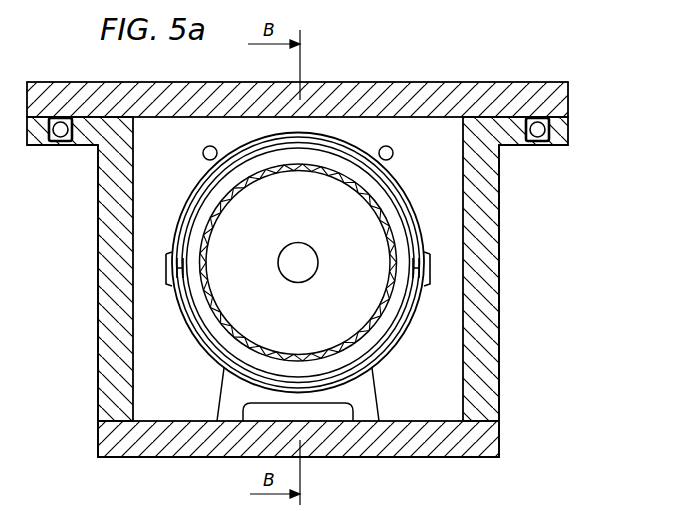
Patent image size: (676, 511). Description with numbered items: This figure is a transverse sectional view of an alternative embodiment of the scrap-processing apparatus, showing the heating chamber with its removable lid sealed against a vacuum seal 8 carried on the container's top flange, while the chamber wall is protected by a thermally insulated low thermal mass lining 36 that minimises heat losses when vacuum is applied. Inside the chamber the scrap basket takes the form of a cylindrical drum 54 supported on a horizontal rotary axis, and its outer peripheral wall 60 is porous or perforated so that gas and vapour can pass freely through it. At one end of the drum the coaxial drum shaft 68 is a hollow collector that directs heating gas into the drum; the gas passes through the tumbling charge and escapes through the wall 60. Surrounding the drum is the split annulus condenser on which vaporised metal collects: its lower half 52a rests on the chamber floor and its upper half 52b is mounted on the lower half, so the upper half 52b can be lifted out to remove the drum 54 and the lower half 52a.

The vacuum seal 8 is at (61, 141).
The thermally insulated low thermal mass lining 36 is at (107, 323).
The lower half of condenser 52a is at (392, 350).
The upper half of condenser 52b is at (398, 180).
The cylindrical drum 54 is at (248, 205).
The outer peripheral wall 60 is at (384, 216).
The coaxial drum shaft 68 is at (287, 280).